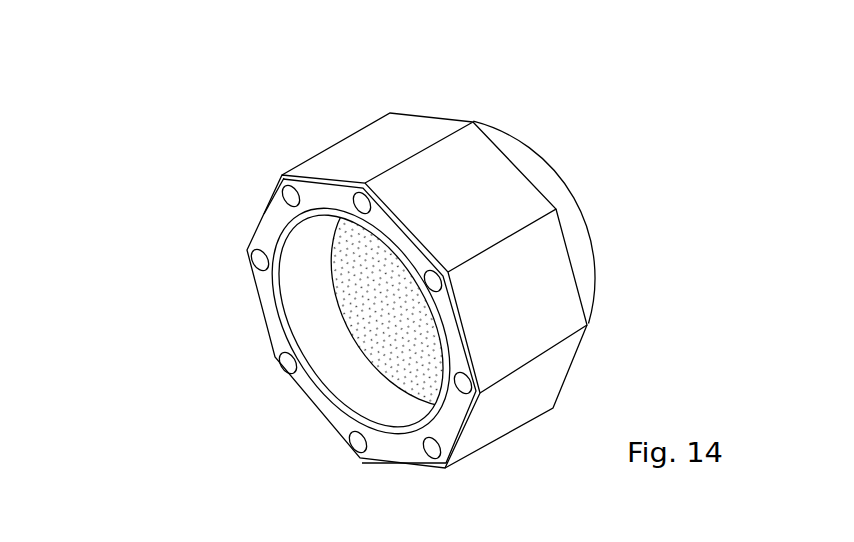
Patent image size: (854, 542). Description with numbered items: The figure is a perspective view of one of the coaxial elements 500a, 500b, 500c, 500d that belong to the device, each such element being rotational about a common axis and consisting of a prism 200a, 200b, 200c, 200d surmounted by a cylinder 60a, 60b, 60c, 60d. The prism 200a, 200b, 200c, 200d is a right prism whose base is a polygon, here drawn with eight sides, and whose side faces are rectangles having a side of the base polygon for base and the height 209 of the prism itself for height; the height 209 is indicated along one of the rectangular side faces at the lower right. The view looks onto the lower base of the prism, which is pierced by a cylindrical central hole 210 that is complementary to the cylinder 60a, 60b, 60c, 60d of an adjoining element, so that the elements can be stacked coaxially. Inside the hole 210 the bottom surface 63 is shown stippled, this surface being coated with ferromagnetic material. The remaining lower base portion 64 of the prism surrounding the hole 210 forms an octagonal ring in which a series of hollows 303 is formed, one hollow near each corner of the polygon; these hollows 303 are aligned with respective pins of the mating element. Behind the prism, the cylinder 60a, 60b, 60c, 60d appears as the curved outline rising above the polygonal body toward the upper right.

The coaxial element 500a is at (427, 272).
The coaxial element 500b is at (427, 272).
The coaxial element 500c is at (427, 272).
The coaxial element 500d is at (199, 151).
The cylinder 60a is at (434, 261).
The cylinder 60b is at (434, 261).
The cylinder 60c is at (434, 261).
The cylinder 60d is at (511, 138).
The prism 200a is at (650, 200).
The prism 200b is at (650, 200).
The prism 200c is at (650, 200).
The prism 200d is at (547, 298).
The bottom surface 63 is at (393, 285).
The lower base portion 64 is at (270, 303).
The cylindrical central hole 210 is at (339, 366).
The hollow 303 is at (430, 447).
The height 209 is at (512, 433).